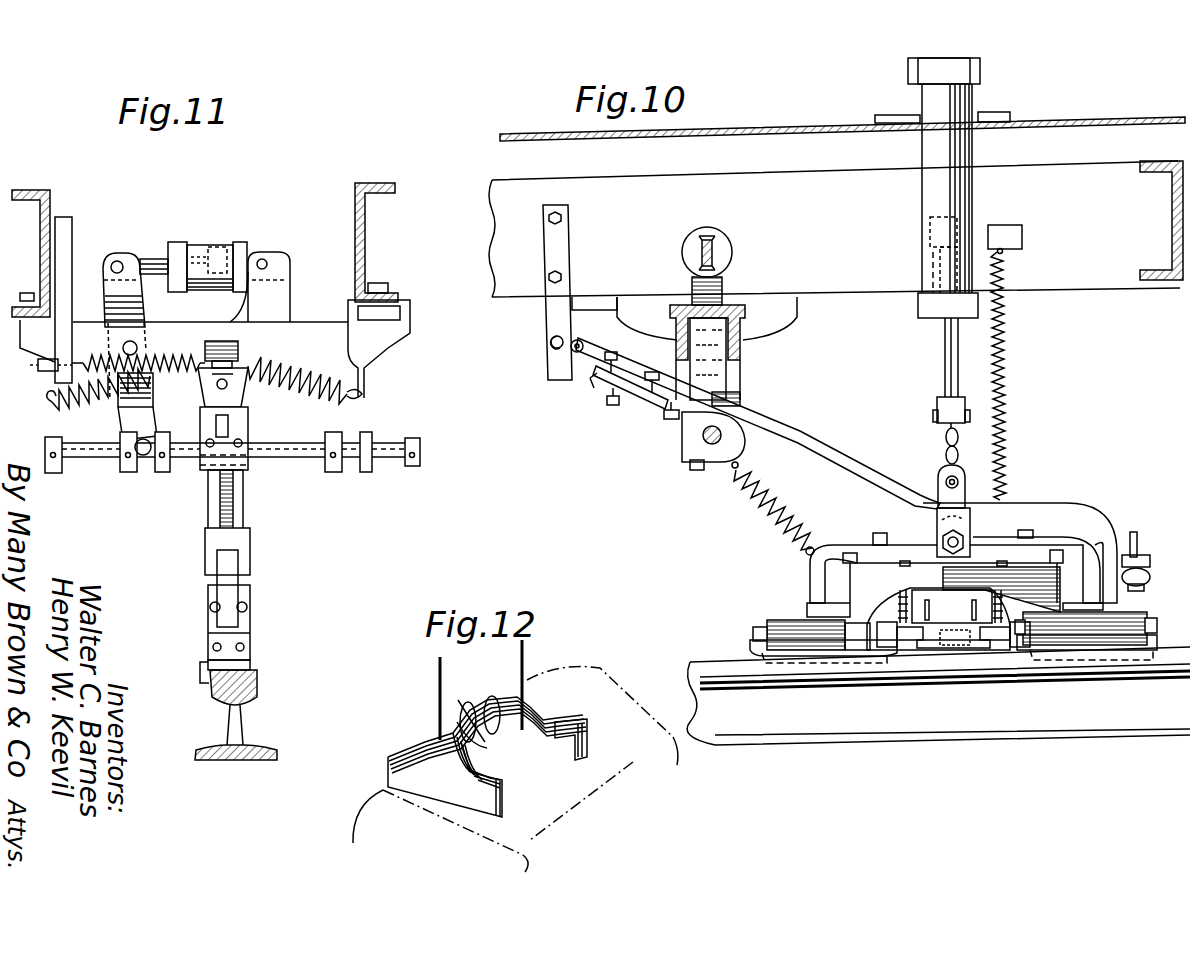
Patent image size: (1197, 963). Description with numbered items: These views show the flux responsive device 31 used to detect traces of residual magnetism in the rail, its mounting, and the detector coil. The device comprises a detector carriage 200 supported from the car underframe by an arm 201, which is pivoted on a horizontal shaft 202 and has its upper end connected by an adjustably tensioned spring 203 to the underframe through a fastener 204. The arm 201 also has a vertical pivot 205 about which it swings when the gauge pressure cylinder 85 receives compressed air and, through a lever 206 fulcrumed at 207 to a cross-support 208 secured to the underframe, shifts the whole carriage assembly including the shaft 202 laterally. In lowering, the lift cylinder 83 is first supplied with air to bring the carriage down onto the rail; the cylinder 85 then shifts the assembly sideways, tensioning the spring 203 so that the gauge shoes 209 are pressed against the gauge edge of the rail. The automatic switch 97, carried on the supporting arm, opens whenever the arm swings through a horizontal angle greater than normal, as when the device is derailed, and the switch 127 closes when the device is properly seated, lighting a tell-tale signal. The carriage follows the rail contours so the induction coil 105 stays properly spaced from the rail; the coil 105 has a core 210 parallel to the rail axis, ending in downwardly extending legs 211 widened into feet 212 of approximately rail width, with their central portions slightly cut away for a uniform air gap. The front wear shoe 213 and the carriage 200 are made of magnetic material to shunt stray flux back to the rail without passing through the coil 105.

In FIG. 10, the flux responsive device 31 is at (776, 590).
In FIG. 10, the lift cylinder 83 is at (965, 148).
In FIG. 11, the gauge pressure cylinder 85 is at (222, 242).
In FIG. 10, the gauge pressure cylinder 85 is at (712, 234).
In FIG. 11, the automatic switch 97 is at (251, 380).
In FIG. 10, the automatic switch 97 is at (608, 383).
In FIG. 10, the induction coil 105 is at (955, 648).
In FIG. 12, the induction coil 105 is at (487, 747).
In FIG. 10, the switch 127 is at (1010, 232).
In FIG. 11, the detector carriage 200 is at (257, 581).
In FIG. 10, the detector carriage 200 is at (1047, 530).
In FIG. 11, the arm 201 is at (240, 499).
In FIG. 10, the arm 201 is at (800, 445).
In FIG. 11, the horizontal shaft 202 is at (283, 460).
In FIG. 10, the horizontal shaft 202 is at (700, 441).
In FIG. 11, the adjustably tensioned spring 203 is at (170, 362).
In FIG. 10, the adjustably tensioned spring 203 is at (568, 346).
In FIG. 11, the fastener 204 is at (50, 372).
In FIG. 10, the vertical pivot 205 is at (740, 396).
In FIG. 11, the lever 206 is at (133, 296).
In FIG. 10, the lever 206 is at (718, 370).
In FIG. 11, the fulcrum 207 is at (133, 343).
In FIG. 10, the fulcrum 207 is at (680, 340).
In FIG. 11, the cross-support 208 is at (385, 337).
In FIG. 10, the cross-support 208 is at (742, 348).
In FIG. 11, the gauge shoes 209 is at (200, 669).
In FIG. 10, the gauge shoes 209 is at (783, 663).
In FIG. 12, the core 210 is at (503, 697).
In FIG. 12, the legs 211 is at (437, 755).
In FIG. 12, the feet 212 is at (557, 713).
In FIG. 11, the front wear shoe 213 is at (250, 665).
In FIG. 10, the front wear shoe 213 is at (822, 648).